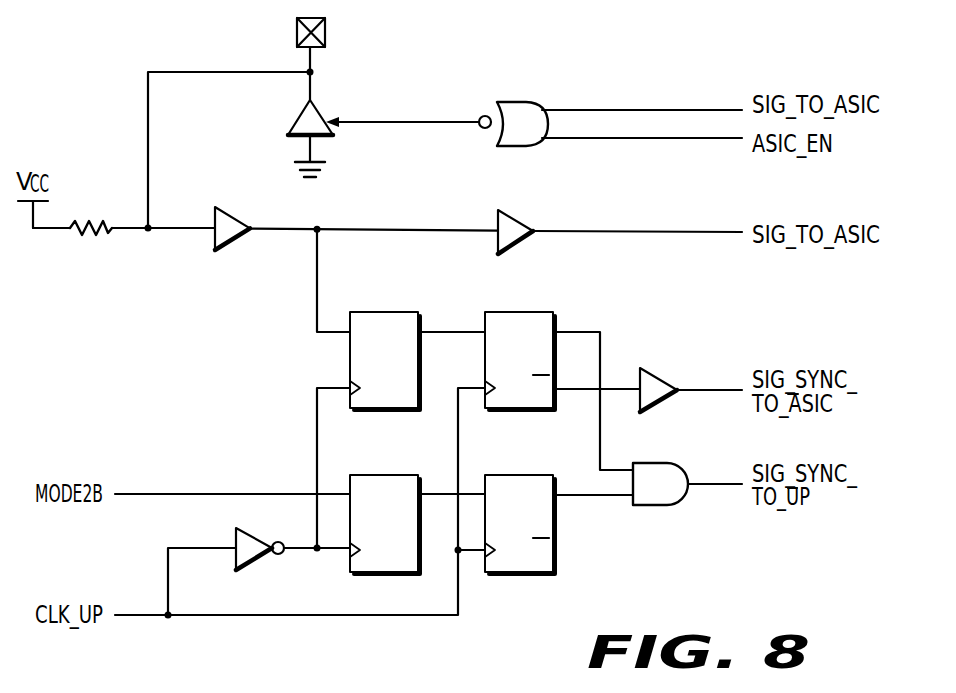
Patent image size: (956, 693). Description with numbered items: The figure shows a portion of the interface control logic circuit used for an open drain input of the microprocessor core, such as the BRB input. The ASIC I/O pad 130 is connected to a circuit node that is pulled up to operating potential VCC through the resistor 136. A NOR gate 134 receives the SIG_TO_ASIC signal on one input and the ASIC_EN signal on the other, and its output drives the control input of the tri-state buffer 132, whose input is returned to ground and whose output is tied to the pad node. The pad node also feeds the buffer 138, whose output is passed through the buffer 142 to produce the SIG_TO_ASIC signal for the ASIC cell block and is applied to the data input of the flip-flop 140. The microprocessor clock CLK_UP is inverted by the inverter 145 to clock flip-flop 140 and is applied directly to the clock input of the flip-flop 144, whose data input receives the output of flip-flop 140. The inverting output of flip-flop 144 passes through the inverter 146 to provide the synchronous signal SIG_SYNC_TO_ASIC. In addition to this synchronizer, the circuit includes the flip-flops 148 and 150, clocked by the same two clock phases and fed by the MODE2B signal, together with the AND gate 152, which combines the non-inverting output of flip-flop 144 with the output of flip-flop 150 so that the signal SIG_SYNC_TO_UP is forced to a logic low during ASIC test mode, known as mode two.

The ASIC I/O pad 130 is at (297, 30).
The tri-state buffer 132 is at (296, 118).
The NOR gate 134 is at (503, 104).
The resistor 136 is at (89, 241).
The buffer 138 is at (236, 240).
The flip-flop 140 is at (396, 311).
The buffer 142 is at (516, 218).
The flip-flop 144 is at (530, 311).
The inverter 145 is at (256, 561).
The inverter 146 is at (658, 376).
The flip-flop 148 is at (396, 474).
The flip-flop 150 is at (530, 474).
The AND gate 152 is at (665, 506).